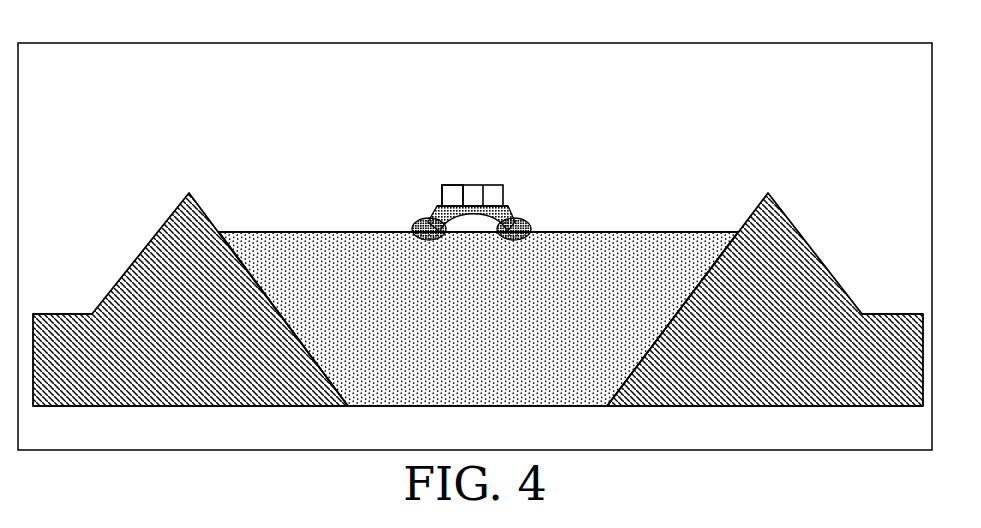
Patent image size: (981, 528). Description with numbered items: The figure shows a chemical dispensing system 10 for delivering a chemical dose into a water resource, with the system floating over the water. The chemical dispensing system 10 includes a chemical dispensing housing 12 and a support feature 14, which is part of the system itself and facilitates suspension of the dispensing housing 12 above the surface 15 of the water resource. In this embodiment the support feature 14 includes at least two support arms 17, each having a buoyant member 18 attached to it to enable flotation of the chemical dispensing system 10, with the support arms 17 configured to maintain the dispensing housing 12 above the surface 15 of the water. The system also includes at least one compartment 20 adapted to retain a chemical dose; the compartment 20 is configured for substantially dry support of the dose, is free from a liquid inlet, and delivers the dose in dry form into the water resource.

The chemical dispensing system 10 is at (478, 182).
The chemical dispensing housing 12 is at (492, 184).
The support feature 14 is at (440, 205).
The surface of the water resource 15 is at (306, 232).
The support arms 17 is at (508, 207).
The buoyant member 18 is at (523, 230).
The compartment 20 is at (450, 192).